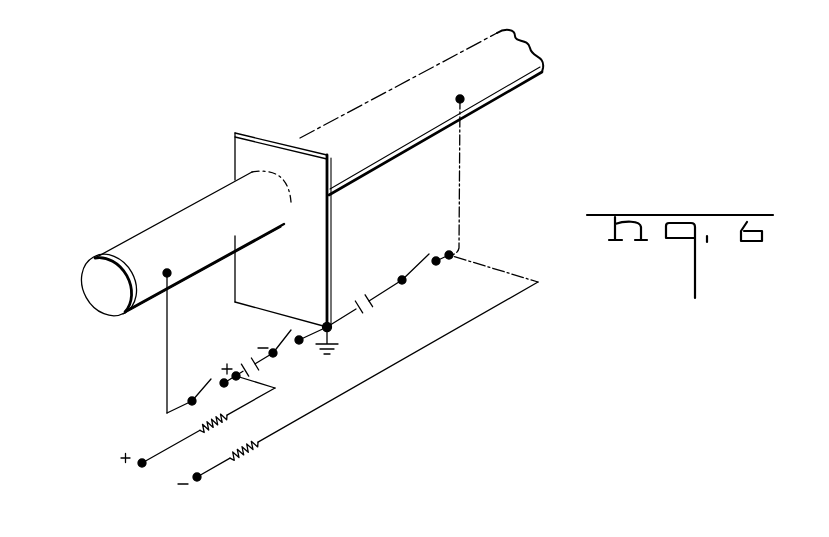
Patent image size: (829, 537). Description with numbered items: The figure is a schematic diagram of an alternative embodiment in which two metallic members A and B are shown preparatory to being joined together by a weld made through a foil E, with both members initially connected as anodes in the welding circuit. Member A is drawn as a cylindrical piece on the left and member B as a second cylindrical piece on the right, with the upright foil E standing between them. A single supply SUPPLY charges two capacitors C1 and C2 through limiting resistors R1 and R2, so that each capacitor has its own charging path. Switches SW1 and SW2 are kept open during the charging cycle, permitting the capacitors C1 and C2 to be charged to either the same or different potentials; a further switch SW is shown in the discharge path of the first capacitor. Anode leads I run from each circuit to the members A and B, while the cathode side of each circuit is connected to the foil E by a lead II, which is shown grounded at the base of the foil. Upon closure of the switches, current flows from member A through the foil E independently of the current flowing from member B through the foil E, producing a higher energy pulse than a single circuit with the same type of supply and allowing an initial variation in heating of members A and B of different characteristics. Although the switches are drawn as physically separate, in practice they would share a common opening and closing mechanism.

The member A is at (167, 229).
The member B is at (499, 87).
The foil E is at (247, 152).
The anode leads I is at (126, 352).
The lead II is at (373, 351).
The switch SW is at (287, 339).
The switch SW1 is at (197, 390).
The switch SW2 is at (466, 259).
The capacitor C1 is at (248, 366).
The capacitor C2 is at (364, 303).
The limiting resistor R1 is at (203, 423).
The limiting resistor R2 is at (270, 468).
The supply SUPPLY is at (123, 474).